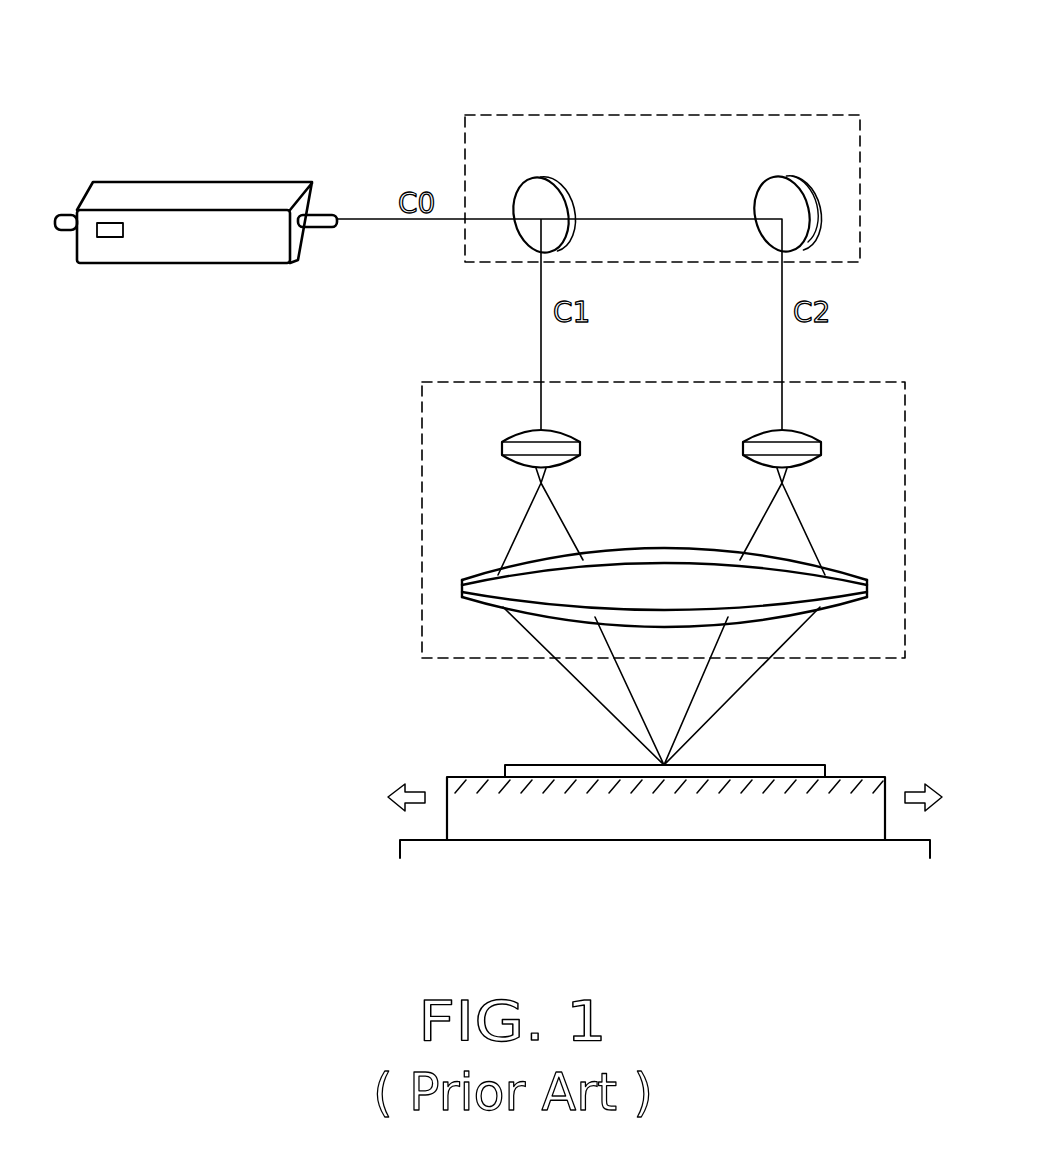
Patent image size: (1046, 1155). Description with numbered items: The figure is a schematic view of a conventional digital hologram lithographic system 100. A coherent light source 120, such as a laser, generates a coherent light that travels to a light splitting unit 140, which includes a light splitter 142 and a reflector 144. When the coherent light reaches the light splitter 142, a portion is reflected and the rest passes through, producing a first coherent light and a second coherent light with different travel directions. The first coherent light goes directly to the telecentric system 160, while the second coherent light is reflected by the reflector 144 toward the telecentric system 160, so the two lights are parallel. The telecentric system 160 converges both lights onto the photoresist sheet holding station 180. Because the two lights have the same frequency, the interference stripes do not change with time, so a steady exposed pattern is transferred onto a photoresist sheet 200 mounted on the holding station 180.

The digital hologram lithographic system 100 is at (683, 60).
The coherent light source 120 is at (206, 187).
The light splitting unit 140 is at (775, 113).
The light splitter 142 is at (565, 190).
The reflector 144 is at (757, 188).
The telecentric system 160 is at (825, 380).
The photoresist sheet holding station 180 is at (686, 825).
The photoresist sheet 200 is at (797, 766).